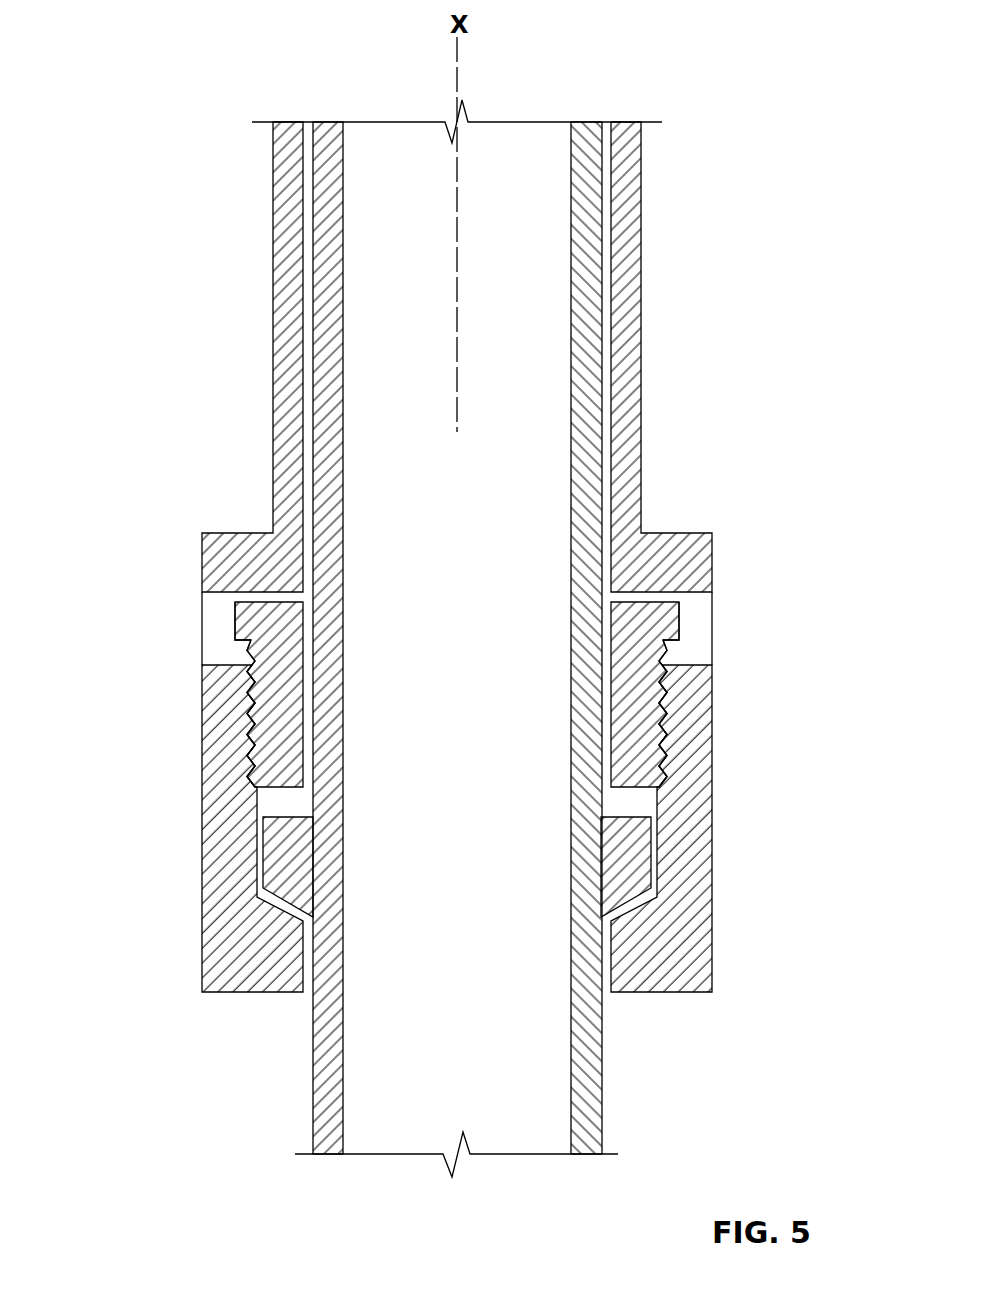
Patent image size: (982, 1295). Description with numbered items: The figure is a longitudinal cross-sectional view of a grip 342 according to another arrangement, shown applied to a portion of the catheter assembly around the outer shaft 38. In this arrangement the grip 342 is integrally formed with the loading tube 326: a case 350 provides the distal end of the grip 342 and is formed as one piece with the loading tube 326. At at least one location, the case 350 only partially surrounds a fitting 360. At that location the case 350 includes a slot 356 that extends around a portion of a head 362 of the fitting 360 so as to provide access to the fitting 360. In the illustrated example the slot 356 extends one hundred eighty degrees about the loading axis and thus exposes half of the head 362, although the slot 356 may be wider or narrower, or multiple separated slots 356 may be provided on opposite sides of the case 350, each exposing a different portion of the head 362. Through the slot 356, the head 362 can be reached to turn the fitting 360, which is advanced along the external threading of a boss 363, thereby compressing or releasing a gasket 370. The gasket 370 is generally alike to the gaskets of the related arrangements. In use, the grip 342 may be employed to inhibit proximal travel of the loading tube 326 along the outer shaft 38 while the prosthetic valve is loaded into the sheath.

The outer shaft 38 is at (603, 433).
The loading tube 326 is at (273, 463).
The grip 342 is at (162, 802).
The case 350 is at (712, 628).
The slot 356 is at (215, 622).
The fitting 360 is at (250, 600).
The head 362 is at (233, 615).
The boss 363 is at (250, 690).
The gasket 370 is at (265, 843).